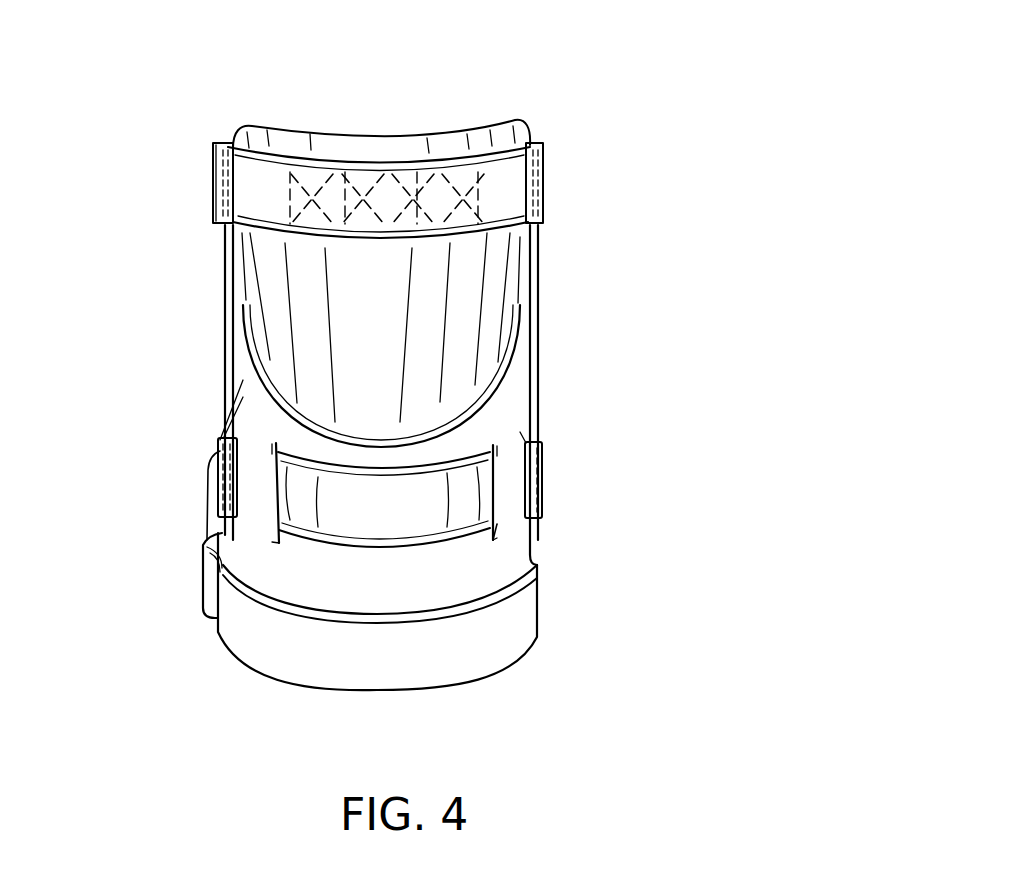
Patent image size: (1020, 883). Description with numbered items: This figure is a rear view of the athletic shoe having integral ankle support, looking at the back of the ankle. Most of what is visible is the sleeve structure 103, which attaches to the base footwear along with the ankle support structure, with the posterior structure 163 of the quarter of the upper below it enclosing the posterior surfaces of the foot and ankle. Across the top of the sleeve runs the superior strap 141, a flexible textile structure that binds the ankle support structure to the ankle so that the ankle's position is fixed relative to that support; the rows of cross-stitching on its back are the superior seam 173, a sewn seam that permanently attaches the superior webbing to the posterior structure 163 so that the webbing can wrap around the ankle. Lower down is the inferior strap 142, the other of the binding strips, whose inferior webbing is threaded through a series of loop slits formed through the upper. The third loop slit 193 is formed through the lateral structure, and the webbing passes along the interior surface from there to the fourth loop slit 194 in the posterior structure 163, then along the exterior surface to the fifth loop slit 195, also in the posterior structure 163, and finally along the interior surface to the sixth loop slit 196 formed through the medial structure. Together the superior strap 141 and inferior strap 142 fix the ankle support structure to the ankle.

The sleeve structure 103 is at (463, 297).
The superior strap 141 is at (541, 190).
The inferior strap 142 is at (437, 528).
The posterior structure 163 is at (313, 567).
The superior seam 173 is at (404, 192).
The third loop slit 193 is at (527, 470).
The fourth loop slit 194 is at (497, 524).
The fifth loop slit 195 is at (272, 522).
The sixth loop slit 196 is at (207, 467).